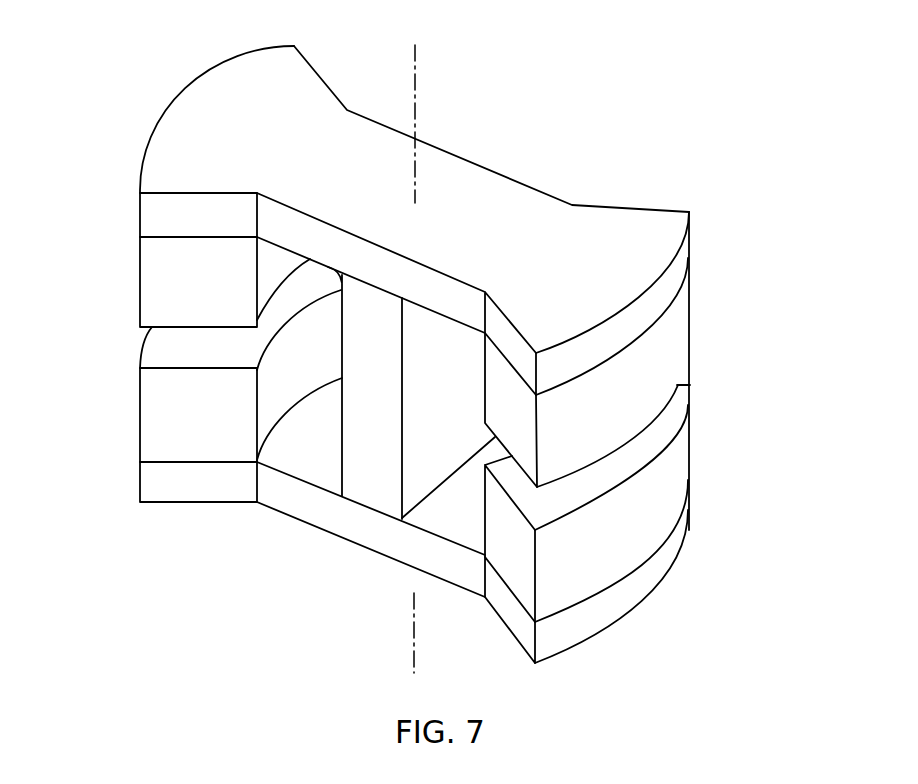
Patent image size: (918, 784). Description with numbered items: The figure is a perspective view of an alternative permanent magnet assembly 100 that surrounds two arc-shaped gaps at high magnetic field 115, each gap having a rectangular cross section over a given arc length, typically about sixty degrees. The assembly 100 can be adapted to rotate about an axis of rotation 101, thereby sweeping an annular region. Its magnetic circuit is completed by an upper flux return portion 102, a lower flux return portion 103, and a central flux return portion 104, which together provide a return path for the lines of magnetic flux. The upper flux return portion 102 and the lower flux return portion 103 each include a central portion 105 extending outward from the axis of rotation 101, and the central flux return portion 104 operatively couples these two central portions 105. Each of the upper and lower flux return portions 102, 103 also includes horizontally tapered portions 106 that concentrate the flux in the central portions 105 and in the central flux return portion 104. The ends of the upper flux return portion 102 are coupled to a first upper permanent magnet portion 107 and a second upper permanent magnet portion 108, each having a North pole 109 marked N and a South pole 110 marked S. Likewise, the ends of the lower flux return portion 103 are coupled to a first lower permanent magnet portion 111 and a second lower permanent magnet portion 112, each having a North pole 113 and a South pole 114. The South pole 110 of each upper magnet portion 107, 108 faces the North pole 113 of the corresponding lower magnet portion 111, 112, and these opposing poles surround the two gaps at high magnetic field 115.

The permanent magnet assembly 100 is at (692, 133).
The axis of rotation 101 is at (413, 660).
The upper flux return portion 102 is at (493, 197).
The lower flux return portion 103 is at (272, 498).
The central flux return portion 104 is at (358, 448).
The central portion 105 is at (365, 525).
The horizontally tapered portions 106 is at (513, 623).
The first upper permanent magnet portion 107 is at (648, 367).
The second upper permanent magnet portion 108 is at (407, 297).
The North pole 109 is at (730, 256).
The South pole 110 is at (730, 340).
The first lower permanent magnet portion 111 is at (642, 512).
The second lower permanent magnet portion 112 is at (416, 414).
The North pole 113 is at (730, 425).
The South pole 114 is at (730, 500).
The gap at high magnetic field 115 is at (730, 382).